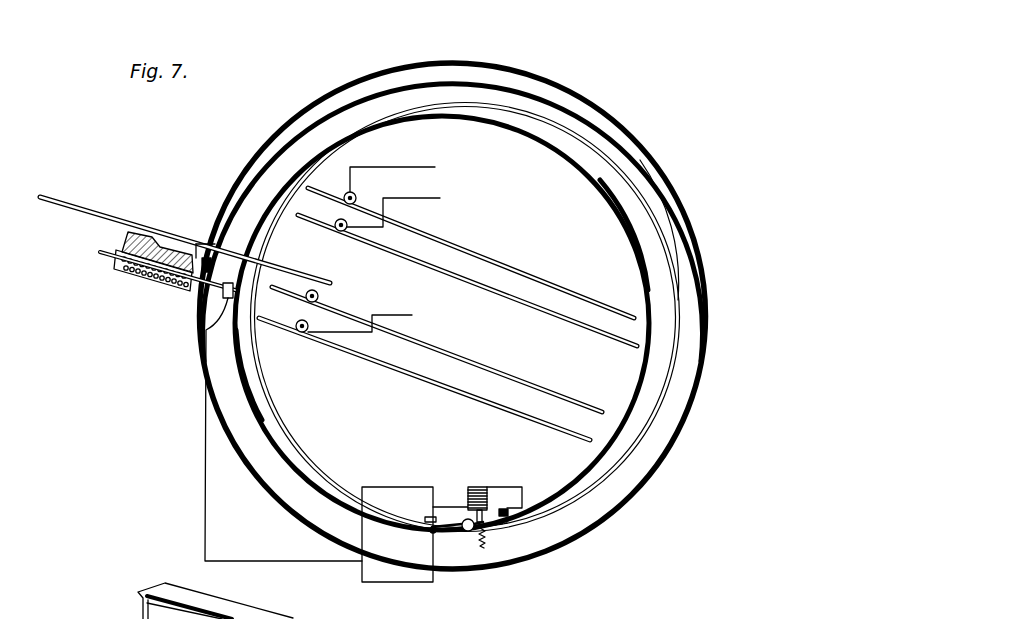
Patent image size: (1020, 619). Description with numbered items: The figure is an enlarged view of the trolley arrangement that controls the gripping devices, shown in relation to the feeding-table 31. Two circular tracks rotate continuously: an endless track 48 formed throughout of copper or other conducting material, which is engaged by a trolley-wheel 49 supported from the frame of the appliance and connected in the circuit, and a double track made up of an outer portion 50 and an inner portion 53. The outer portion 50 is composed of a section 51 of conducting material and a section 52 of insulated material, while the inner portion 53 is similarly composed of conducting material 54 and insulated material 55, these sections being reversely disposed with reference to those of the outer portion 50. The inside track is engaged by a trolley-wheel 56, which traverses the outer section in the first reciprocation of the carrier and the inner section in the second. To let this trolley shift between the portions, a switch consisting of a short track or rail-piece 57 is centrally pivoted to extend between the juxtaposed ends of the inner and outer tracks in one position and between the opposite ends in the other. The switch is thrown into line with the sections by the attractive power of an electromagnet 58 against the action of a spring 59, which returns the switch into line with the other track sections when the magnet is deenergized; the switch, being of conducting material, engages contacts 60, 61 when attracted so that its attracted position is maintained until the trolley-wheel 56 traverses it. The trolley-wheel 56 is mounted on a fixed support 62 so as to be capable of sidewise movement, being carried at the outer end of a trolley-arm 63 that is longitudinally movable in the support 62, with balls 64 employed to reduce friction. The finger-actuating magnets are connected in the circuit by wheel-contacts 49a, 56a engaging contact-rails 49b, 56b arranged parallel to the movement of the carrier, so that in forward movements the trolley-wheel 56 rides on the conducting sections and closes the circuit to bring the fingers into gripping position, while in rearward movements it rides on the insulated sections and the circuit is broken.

The feeding-table 31 is at (102, 215).
The endless track 48 is at (632, 137).
The trolley-wheel 49 is at (205, 258).
The wheel-contact 49a is at (347, 222).
The contact-rail 49b is at (308, 323).
The outer portion of double track 50 is at (661, 215).
The conducting section 51 is at (363, 104).
The insulated section 52 is at (569, 121).
The inner portion of double track 53 is at (442, 323).
The conducting material 54 is at (651, 271).
The insulated material 55 is at (265, 387).
The trolley-wheel 56 is at (225, 299).
The wheel-contact 56a is at (495, 291).
The contact-rail 56b is at (503, 408).
The short track or rail-piece 57 is at (447, 522).
The electromagnet 58 is at (495, 492).
The spring 59 is at (486, 533).
The contact 60 is at (504, 509).
The contact 61 is at (432, 533).
The fixed support 62 is at (148, 236).
The trolley-arm 63 is at (196, 292).
The balls 64 is at (138, 280).